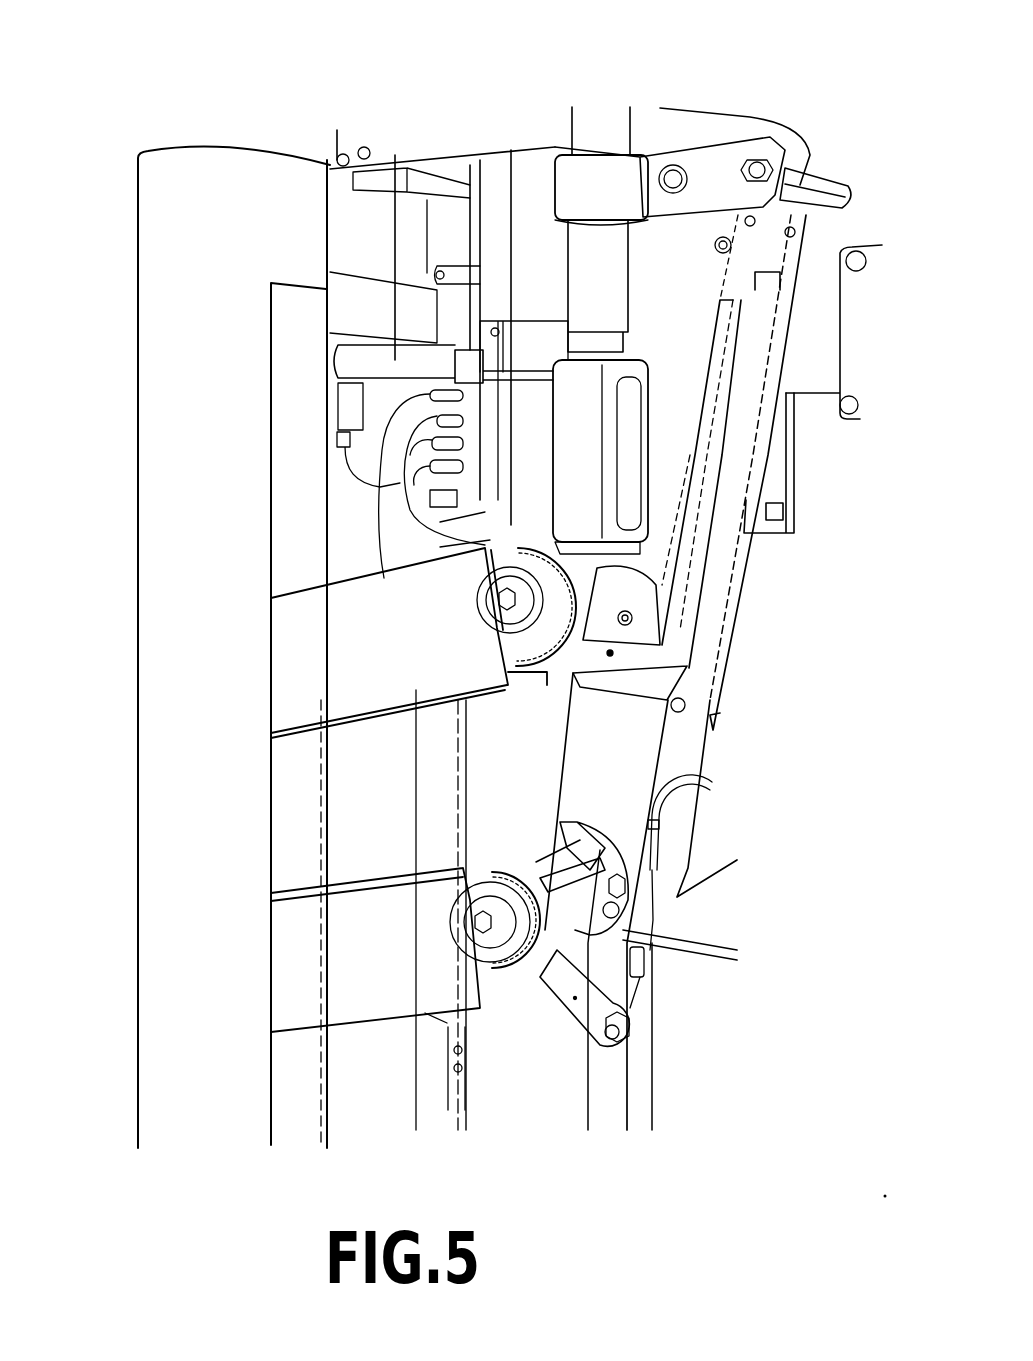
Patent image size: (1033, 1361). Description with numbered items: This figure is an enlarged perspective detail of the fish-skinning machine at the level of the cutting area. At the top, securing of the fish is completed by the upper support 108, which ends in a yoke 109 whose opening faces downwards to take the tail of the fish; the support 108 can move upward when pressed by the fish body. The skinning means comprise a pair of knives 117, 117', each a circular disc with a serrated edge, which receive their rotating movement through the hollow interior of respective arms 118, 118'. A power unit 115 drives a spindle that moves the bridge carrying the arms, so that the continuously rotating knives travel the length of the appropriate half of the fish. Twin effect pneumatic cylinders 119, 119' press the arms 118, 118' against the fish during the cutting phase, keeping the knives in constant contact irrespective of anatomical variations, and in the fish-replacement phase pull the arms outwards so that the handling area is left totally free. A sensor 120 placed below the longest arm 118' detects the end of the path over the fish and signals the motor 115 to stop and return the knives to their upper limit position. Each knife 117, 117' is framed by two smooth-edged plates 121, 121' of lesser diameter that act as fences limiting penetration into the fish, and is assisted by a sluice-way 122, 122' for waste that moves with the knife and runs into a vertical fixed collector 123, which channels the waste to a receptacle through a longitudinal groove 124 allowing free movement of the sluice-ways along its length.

The upper support 108 is at (607, 282).
The yoke 109 is at (588, 455).
The power unit 115 is at (473, 1070).
The knife 117 is at (704, 639).
The knife 117' is at (563, 991).
The arm 118 is at (777, 472).
The arm 118' is at (693, 901).
The twin effect pneumatic cylinder 119 is at (389, 188).
The twin effect pneumatic cylinder 119' is at (510, 271).
The sensor 120 is at (630, 1048).
The plate 121 is at (314, 607).
The plate 121' is at (302, 880).
The sluice-way 122 is at (300, 642).
The sluice-way 122' is at (274, 950).
The collector 123 is at (208, 697).
The longitudinal groove 124 is at (265, 490).